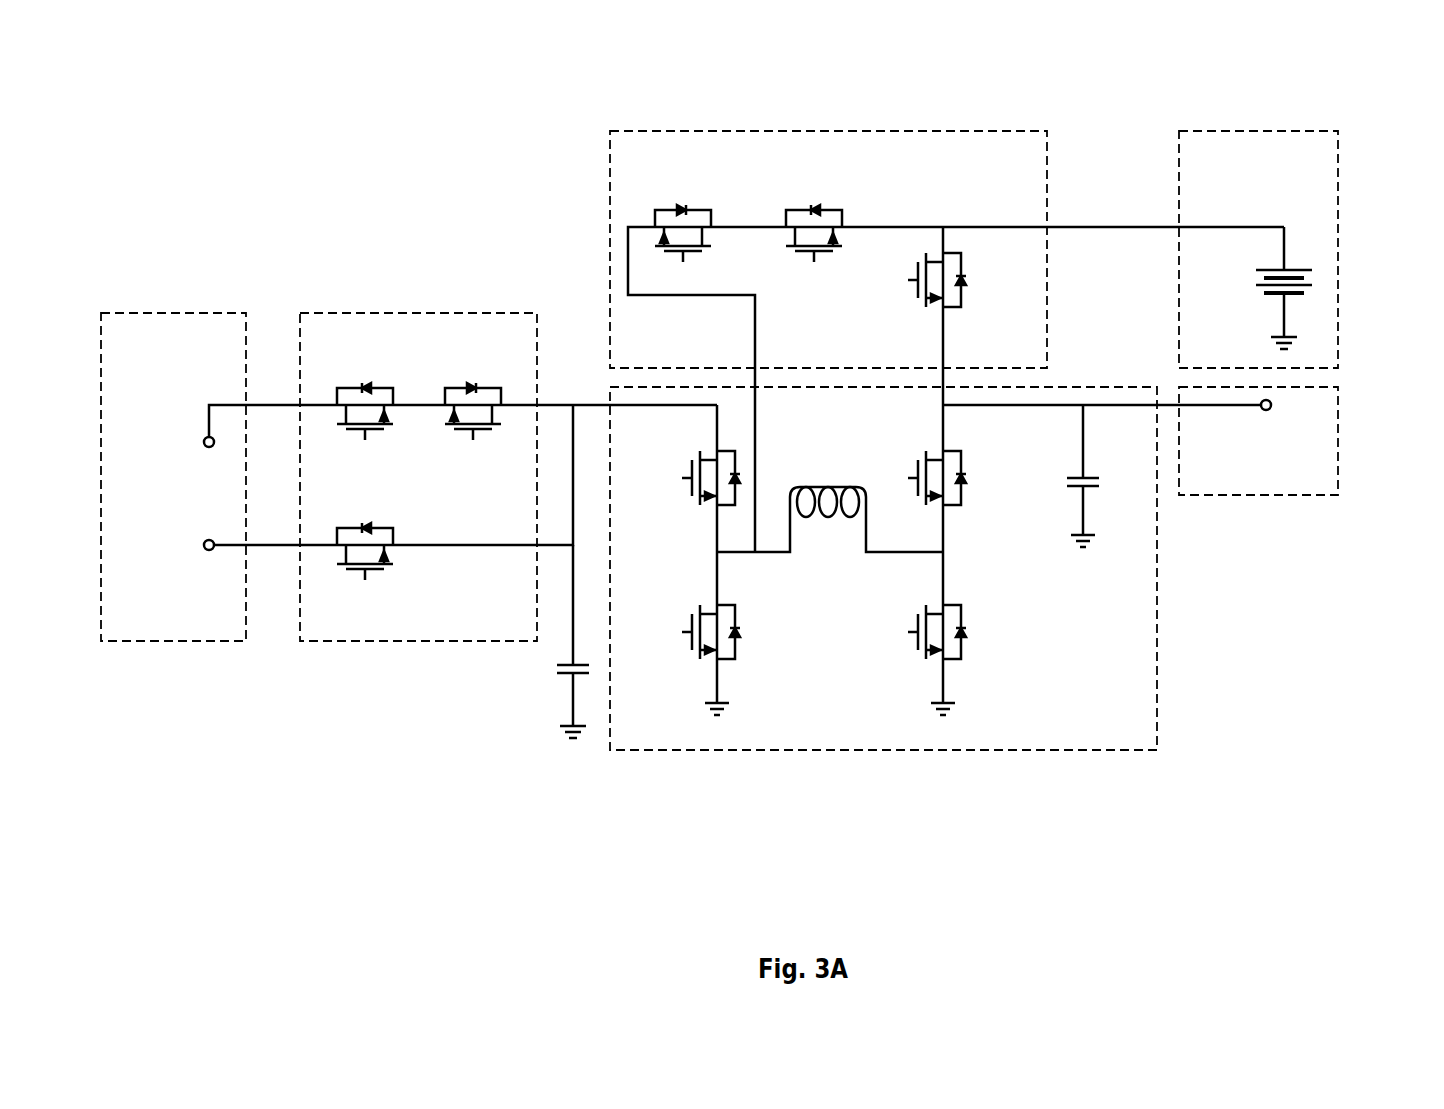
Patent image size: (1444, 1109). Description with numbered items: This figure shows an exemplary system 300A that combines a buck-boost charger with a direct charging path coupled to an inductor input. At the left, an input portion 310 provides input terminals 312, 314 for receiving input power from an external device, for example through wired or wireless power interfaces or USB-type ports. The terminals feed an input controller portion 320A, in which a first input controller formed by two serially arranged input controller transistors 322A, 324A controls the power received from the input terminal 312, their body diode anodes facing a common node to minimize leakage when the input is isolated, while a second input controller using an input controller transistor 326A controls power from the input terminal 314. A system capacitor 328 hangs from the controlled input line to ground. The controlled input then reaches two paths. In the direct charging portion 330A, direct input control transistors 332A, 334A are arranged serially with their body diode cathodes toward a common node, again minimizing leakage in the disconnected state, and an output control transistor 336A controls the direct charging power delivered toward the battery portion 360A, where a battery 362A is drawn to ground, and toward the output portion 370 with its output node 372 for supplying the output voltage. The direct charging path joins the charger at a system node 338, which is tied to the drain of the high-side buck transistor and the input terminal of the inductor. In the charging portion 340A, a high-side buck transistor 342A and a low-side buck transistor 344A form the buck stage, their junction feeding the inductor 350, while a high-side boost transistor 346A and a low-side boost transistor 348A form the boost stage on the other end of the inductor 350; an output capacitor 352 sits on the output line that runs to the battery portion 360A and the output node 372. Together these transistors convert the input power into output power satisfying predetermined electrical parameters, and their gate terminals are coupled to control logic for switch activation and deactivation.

The exemplary system 300A is at (767, 407).
The input portion 310 is at (173, 477).
The input terminal 312 is at (239, 430).
The input terminal 314 is at (239, 547).
The input controller portion 320A is at (418, 477).
The input controller transistor 322A is at (365, 389).
The input controller transistor 324A is at (473, 389).
The input controller transistor 326A is at (365, 575).
The system capacitor 328 is at (556, 641).
The direct charging portion 330A is at (828, 249).
The direct input control transistor 332A is at (683, 214).
The direct input control transistor 334A is at (814, 214).
The output control transistor 336A is at (963, 280).
The system node 338 is at (628, 259).
The charging portion 340A is at (883, 568).
The high-side buck transistor 342A is at (681, 478).
The low-side buck transistor 344A is at (681, 660).
The high-side boost transistor 346A is at (964, 478).
The low-side boost transistor 348A is at (964, 660).
The inductor 350 is at (830, 534).
The output capacitor 352 is at (1099, 476).
The battery portion 360A is at (1258, 249).
The battery 362A is at (1257, 288).
The output portion 370 is at (1258, 441).
The output node 372 is at (1266, 427).